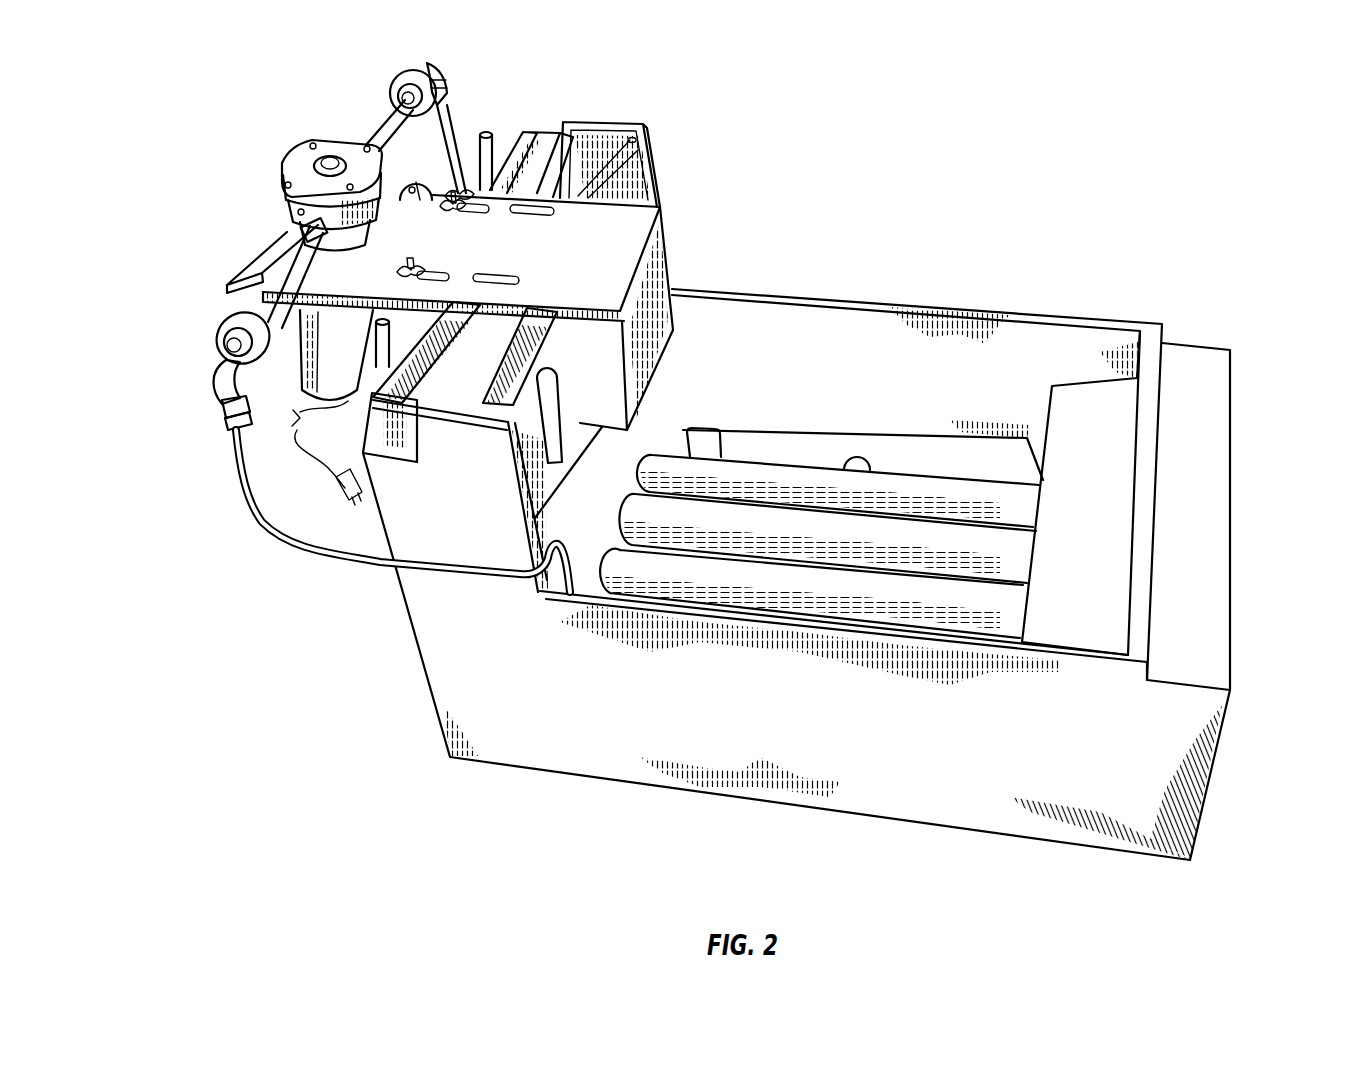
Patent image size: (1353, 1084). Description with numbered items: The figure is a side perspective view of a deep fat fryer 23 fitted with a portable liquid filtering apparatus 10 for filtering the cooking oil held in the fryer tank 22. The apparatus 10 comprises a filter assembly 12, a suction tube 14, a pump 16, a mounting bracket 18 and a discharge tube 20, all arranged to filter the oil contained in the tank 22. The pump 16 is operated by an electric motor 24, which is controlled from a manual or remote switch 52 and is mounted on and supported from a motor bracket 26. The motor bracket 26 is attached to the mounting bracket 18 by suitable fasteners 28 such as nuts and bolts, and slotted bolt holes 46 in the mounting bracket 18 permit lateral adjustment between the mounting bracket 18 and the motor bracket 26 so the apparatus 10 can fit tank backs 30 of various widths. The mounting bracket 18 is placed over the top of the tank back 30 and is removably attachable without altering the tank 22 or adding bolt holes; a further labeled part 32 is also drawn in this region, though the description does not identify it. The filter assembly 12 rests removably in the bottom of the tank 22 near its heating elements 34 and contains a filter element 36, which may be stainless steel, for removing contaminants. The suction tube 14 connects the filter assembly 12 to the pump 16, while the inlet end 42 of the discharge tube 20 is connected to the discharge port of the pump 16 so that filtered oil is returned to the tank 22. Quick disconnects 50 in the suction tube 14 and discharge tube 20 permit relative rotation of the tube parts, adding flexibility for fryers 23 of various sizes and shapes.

The portable liquid filtering apparatus 10 is at (160, 98).
The filter assembly 12 is at (868, 404).
The suction tube 14 is at (710, 348).
The pump 16 is at (296, 168).
The mounting bracket 18 is at (618, 240).
The discharge tube 20 is at (262, 525).
The fryer tank 22 is at (583, 738).
The deep fat fryer 23 is at (1256, 362).
The electric motor 24 is at (327, 358).
The motor bracket 26 is at (240, 262).
The fasteners 28 is at (420, 270).
The tank back 30 is at (621, 124).
The channel 32 is at (605, 358).
The heating elements 34 is at (1010, 540).
The filter element 36 is at (947, 430).
The inlet end of discharge tube 42 is at (302, 228).
The slotted bolt holes 46 is at (505, 282).
The quick disconnects 50 is at (408, 78).
The manual or remote switch 52 is at (423, 185).